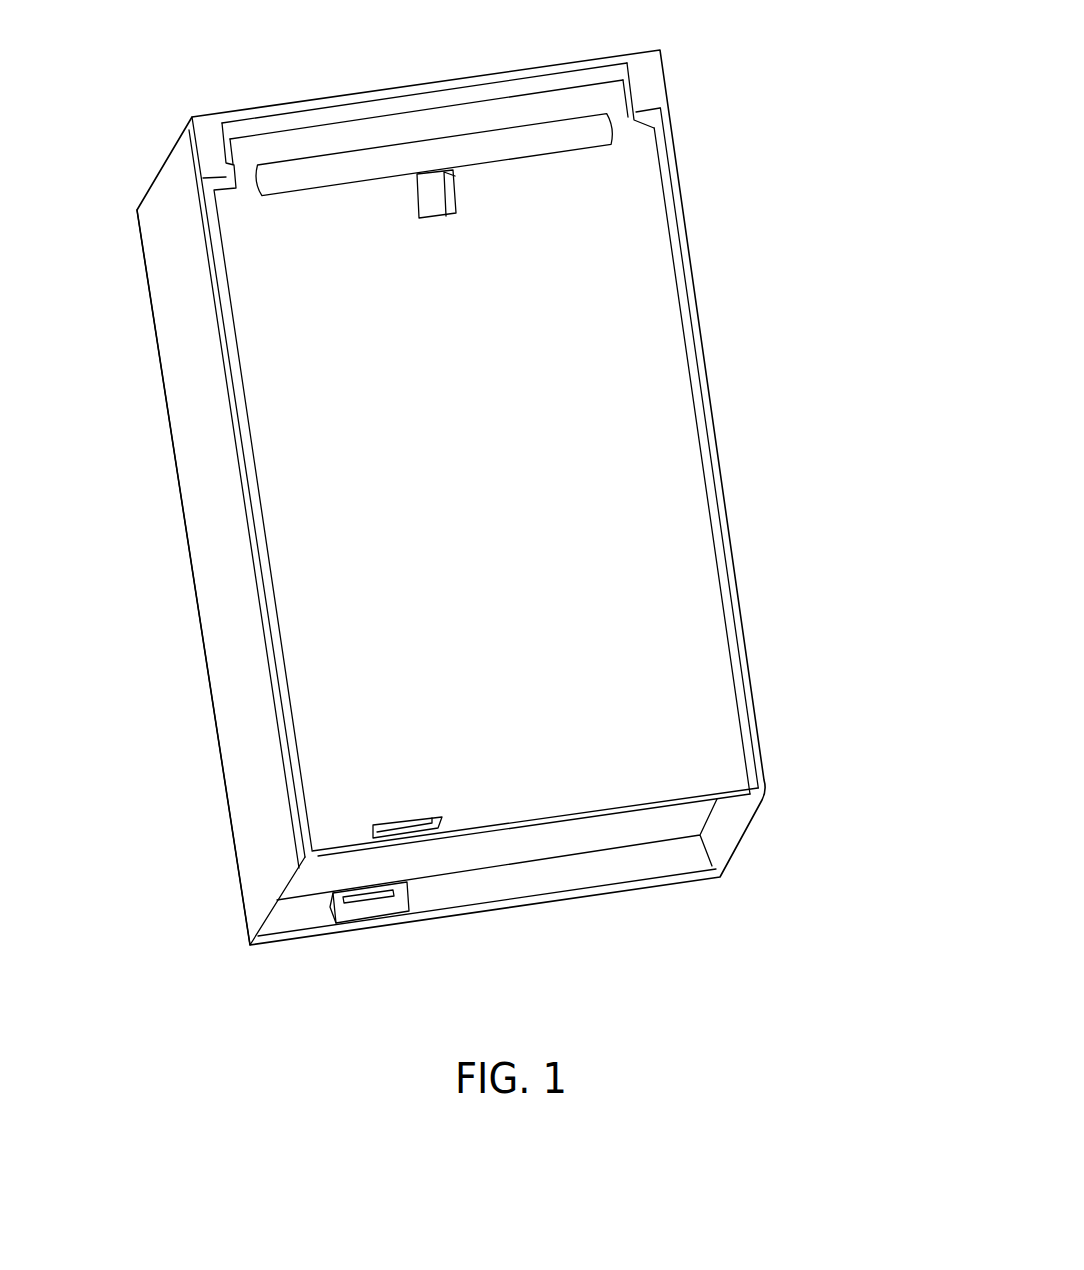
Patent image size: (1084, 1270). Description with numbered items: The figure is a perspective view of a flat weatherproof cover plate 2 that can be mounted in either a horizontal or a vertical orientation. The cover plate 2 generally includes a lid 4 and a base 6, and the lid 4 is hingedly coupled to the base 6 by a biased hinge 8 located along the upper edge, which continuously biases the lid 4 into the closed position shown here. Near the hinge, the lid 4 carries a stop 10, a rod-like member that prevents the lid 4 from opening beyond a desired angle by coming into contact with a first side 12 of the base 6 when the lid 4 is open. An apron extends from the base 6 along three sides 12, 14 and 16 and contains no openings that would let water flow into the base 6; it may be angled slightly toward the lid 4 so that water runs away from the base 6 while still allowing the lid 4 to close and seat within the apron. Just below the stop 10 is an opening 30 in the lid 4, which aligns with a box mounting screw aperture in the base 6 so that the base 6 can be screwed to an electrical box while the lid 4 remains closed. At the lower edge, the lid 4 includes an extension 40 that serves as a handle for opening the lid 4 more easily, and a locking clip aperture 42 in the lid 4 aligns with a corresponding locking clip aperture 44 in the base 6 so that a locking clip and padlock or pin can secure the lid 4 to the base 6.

The flat weatherproof cover plate 2 is at (317, 80).
The lid 4 is at (500, 516).
The base 6 is at (202, 534).
The biased hinge 8 is at (633, 90).
The stop 10 is at (505, 150).
The first side 12 is at (430, 90).
The side 14 is at (228, 392).
The side 16 is at (692, 300).
The opening 30 is at (443, 197).
The extension 40 is at (750, 783).
The locking clip aperture 42 is at (435, 820).
The locking clip aperture 44 is at (395, 895).